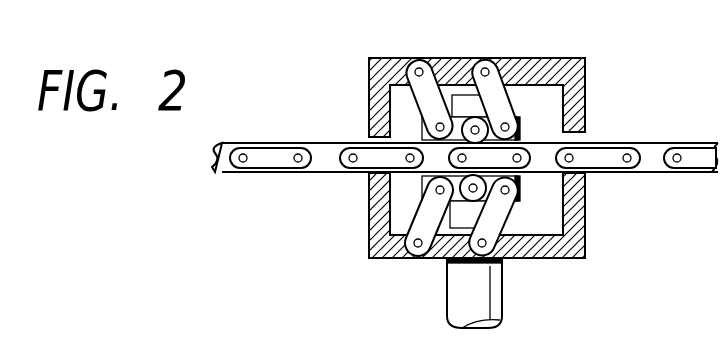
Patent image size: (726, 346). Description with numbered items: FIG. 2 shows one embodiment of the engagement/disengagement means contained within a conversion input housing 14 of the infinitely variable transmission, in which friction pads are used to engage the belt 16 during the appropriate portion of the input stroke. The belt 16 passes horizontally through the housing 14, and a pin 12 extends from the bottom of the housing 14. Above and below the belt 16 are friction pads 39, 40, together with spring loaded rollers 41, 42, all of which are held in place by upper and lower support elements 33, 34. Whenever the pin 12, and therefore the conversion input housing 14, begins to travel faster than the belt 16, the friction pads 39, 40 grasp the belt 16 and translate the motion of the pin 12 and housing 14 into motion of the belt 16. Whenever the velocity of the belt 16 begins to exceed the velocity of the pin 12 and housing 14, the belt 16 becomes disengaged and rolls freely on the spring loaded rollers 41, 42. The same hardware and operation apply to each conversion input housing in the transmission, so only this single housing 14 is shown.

The pin 12 is at (493, 288).
The conversion input housing 14 is at (585, 233).
The belt 16 is at (623, 143).
The upper support element 33 is at (500, 92).
The lower support element 34 is at (430, 218).
The friction pad 39 is at (520, 127).
The friction pad 40 is at (513, 205).
The spring loaded roller 41 is at (470, 117).
The spring loaded roller 42 is at (466, 198).